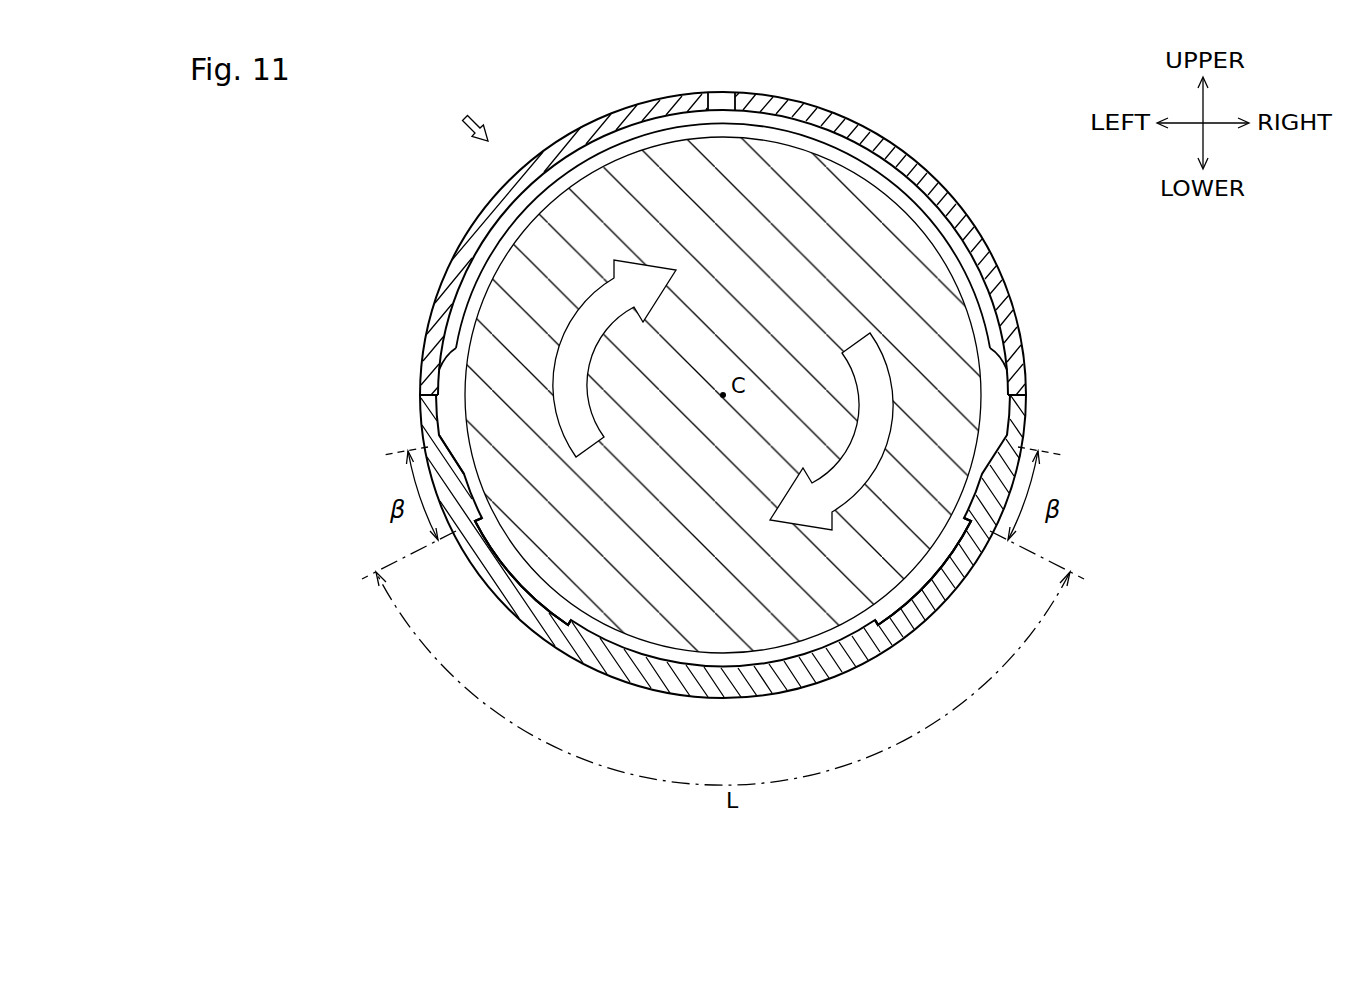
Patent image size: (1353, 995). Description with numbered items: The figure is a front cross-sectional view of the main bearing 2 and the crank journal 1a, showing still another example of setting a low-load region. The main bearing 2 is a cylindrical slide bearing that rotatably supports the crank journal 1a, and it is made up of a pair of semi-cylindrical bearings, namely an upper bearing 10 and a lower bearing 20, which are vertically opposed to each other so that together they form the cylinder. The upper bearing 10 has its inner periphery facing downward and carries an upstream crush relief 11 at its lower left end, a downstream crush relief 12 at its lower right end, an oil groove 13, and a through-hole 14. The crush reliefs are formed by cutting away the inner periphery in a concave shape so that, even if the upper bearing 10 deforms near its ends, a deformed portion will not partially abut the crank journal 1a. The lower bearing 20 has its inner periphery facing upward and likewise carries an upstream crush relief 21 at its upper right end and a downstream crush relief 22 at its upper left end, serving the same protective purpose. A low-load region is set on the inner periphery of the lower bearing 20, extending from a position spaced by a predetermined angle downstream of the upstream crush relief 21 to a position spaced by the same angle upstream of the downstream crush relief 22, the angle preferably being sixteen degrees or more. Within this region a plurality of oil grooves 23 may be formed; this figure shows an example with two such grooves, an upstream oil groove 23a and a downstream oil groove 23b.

The crank journal 1a is at (510, 268).
The main bearing 2 is at (467, 117).
The upper bearing 10 is at (882, 126).
The upstream crush relief 11 is at (437, 385).
The downstream crush relief 12 is at (1000, 353).
The oil groove 13 is at (958, 243).
The through-hole 14 is at (720, 103).
The lower bearing 20 is at (648, 696).
The upstream crush relief 21 is at (1013, 400).
The downstream crush relief 22 is at (447, 438).
The oil groove 23 is at (548, 605).
The upstream oil groove 23a is at (902, 605).
The downstream oil groove 23b is at (548, 605).